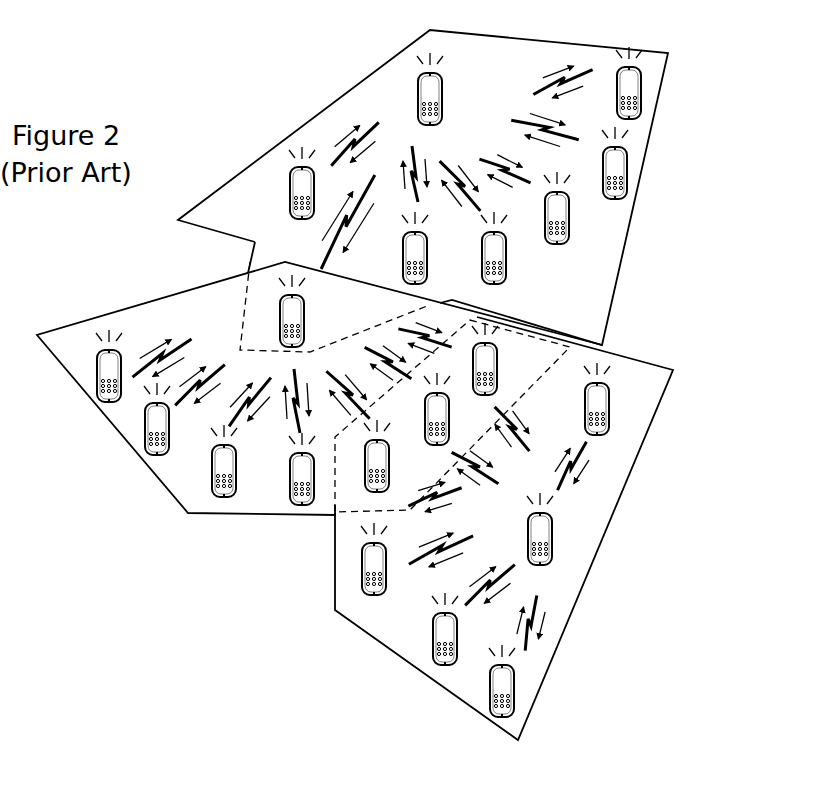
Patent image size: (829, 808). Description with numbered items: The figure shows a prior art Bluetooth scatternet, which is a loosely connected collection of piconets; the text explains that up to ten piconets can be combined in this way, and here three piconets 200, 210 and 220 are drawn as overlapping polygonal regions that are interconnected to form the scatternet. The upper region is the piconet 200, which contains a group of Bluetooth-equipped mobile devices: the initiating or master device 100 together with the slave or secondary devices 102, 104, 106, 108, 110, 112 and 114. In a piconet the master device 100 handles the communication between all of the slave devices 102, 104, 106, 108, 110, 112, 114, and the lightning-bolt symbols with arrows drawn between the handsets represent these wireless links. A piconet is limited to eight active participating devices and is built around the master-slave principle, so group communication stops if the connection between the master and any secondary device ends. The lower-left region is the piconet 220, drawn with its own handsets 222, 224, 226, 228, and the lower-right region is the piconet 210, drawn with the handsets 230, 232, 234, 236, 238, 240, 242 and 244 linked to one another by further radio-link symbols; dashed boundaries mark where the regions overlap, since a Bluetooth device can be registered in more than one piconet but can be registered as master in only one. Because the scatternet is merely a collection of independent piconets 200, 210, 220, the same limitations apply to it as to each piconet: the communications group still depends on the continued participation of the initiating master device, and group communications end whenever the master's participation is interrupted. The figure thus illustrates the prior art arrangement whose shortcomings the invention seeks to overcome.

The master device 100 is at (442, 95).
The slave device 102 is at (290, 181).
The slave device 104 is at (303, 322).
The slave device 106 is at (403, 240).
The slave device 108 is at (482, 240).
The slave device 110 is at (545, 230).
The slave device 112 is at (603, 195).
The slave device 114 is at (640, 100).
The piconet 200 is at (592, 45).
The piconet 210 is at (663, 367).
The piconet 220 is at (117, 432).
The mobile device 222 is at (97, 368).
The mobile device 224 is at (168, 427).
The mobile device 226 is at (212, 455).
The mobile device 228 is at (290, 462).
The mobile device 230 is at (407, 455).
The mobile device 232 is at (447, 437).
The mobile device 234 is at (495, 372).
The mobile device 236 is at (385, 570).
The mobile device 238 is at (455, 620).
The mobile device 240 is at (513, 702).
The mobile device 242 is at (607, 398).
The mobile device 244 is at (552, 517).